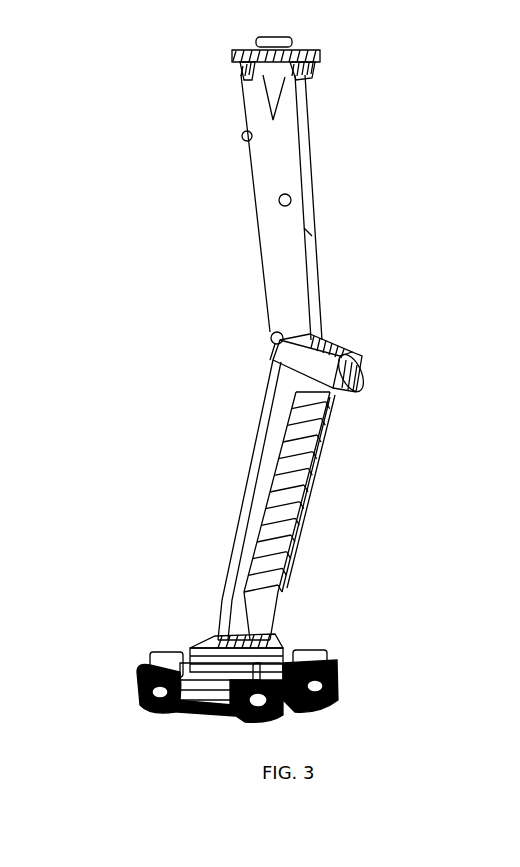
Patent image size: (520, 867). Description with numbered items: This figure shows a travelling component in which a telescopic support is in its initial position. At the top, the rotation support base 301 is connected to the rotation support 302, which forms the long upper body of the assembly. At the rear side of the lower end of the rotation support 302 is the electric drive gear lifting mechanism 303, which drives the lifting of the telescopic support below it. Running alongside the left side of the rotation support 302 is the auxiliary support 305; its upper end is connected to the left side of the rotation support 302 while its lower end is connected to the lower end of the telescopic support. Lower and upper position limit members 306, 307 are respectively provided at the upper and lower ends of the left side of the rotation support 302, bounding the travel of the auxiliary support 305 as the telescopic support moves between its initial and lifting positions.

The rotation support base 301 is at (315, 62).
The rotation support 302 is at (276, 157).
The electric drive gear lifting mechanism 303 is at (345, 360).
The auxiliary support 305 is at (262, 432).
The lower position limit member 306 is at (272, 336).
The upper position limit member 307 is at (243, 138).